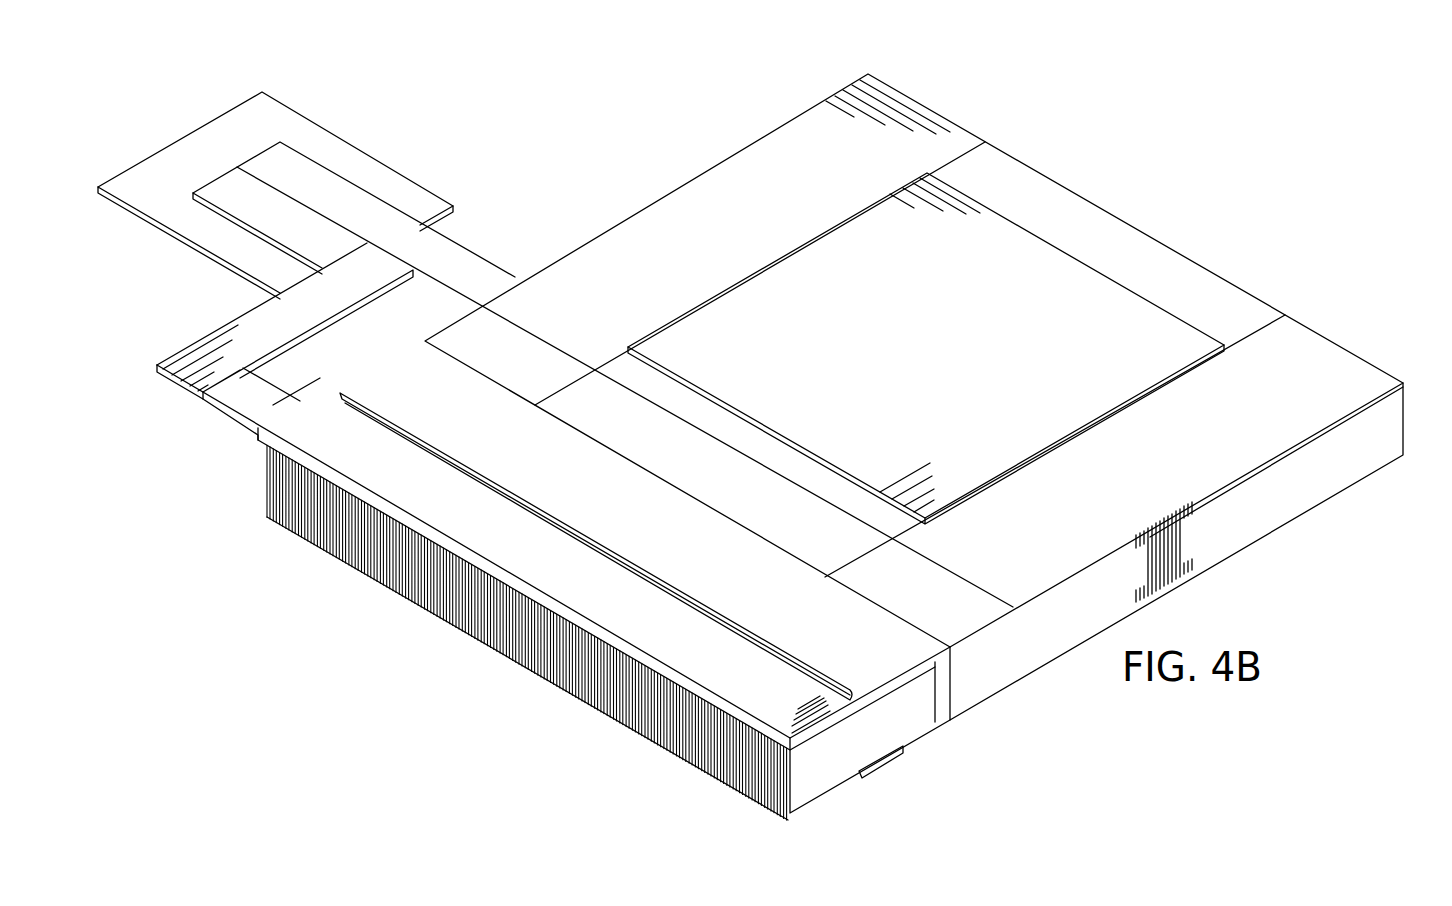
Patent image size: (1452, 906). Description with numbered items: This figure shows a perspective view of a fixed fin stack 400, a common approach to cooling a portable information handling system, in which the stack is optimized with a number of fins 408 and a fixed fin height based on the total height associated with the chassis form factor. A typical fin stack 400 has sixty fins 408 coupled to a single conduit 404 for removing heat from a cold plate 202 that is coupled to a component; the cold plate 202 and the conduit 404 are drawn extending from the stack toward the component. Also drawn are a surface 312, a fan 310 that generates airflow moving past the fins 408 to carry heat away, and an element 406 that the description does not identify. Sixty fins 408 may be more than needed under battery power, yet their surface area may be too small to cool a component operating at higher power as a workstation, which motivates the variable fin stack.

The fin stack 400 is at (644, 70).
The cold plate 202 is at (181, 151).
The single conduit 404 is at (447, 233).
The surface 312 is at (777, 268).
The fan 310 is at (1135, 235).
The heat strip 406 is at (589, 543).
The fins 408 is at (267, 472).